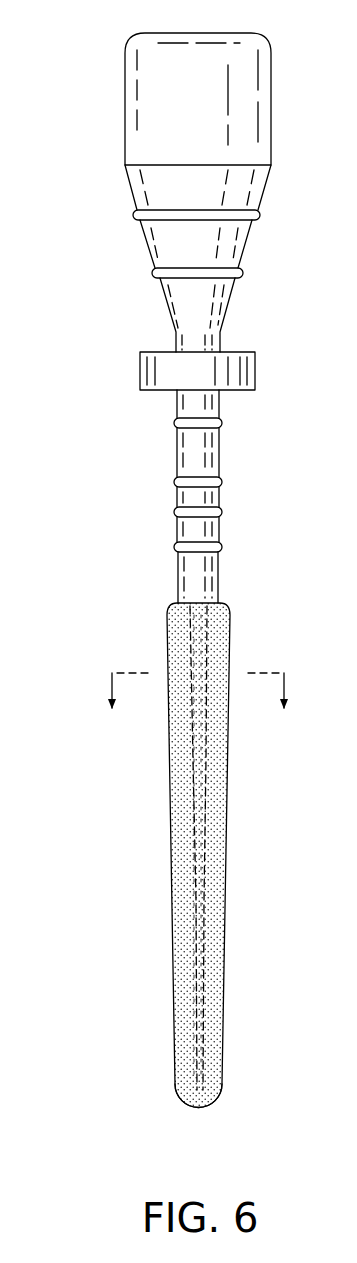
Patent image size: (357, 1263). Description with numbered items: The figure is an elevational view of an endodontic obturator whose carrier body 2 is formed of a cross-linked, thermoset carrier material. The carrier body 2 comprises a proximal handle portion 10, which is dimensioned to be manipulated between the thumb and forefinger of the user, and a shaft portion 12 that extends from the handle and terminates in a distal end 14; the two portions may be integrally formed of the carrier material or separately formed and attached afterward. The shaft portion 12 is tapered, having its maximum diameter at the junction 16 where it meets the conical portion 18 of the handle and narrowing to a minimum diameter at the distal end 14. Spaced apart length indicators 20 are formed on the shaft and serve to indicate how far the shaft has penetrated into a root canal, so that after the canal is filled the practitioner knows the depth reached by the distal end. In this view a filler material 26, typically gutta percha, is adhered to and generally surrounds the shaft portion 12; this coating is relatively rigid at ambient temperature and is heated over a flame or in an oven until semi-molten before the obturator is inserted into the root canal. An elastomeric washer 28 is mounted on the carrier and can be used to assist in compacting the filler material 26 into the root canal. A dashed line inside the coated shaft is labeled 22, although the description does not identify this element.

The carrier body 2 is at (80, 443).
The handle portion 10 is at (143, 77).
The shaft portion 12 is at (188, 457).
The distal end 14 is at (197, 1110).
The junction 16 is at (175, 333).
The conical portion 18 is at (158, 240).
The length indicators 20 is at (135, 215).
The conductor channel 22 is at (180, 818).
The filler material 26 is at (166, 886).
The elastomeric washer 28 is at (140, 371).